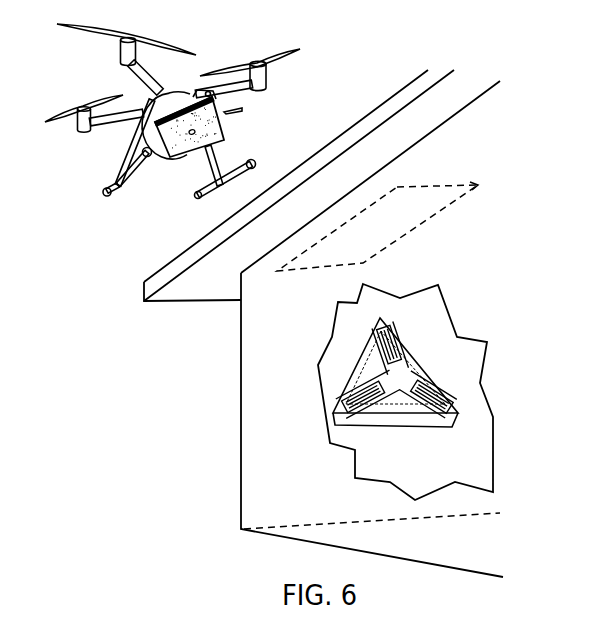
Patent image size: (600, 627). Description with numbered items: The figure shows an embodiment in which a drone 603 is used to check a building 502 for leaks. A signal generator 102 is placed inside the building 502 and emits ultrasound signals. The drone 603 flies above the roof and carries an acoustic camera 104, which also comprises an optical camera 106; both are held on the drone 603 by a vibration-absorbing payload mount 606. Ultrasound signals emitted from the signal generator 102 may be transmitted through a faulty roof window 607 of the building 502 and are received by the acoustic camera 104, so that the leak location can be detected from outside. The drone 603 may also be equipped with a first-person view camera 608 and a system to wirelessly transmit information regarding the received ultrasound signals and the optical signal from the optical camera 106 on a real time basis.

The signal generator 102 is at (427, 427).
The acoustic camera 104 is at (222, 133).
The optical camera 106 is at (191, 135).
The building 502 is at (241, 317).
The drone 603 is at (124, 171).
The vibration-absorbing payload mount 606 is at (155, 98).
The faulty roof window 607 is at (430, 214).
The first-person view (FPV) camera 608 is at (197, 90).